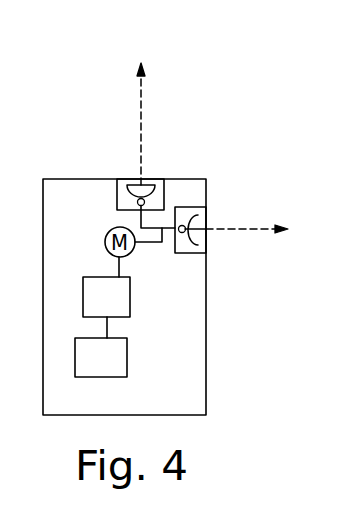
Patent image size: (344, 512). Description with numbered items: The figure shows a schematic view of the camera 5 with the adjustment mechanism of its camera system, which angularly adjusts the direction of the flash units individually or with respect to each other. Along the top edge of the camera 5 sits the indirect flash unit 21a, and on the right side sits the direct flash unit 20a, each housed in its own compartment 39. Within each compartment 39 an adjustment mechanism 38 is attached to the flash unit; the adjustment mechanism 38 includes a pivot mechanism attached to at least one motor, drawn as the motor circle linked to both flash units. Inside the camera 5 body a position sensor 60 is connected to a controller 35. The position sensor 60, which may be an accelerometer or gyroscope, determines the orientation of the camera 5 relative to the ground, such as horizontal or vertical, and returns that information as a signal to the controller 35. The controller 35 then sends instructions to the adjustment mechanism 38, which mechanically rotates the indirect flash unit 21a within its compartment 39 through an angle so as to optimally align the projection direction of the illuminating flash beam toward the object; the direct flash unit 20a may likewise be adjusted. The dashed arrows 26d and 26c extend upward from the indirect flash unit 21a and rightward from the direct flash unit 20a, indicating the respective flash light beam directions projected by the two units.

The camera 5 is at (193, 383).
The direct flash unit 20a is at (199, 252).
The indirect flash unit 21a is at (117, 185).
The ejection direction 26c is at (247, 217).
The ejection direction 26d is at (141, 108).
The controller 35 is at (118, 308).
The adjustment mechanism 38 is at (137, 204).
The compartment 39 is at (164, 196).
The position sensor 60 is at (113, 370).